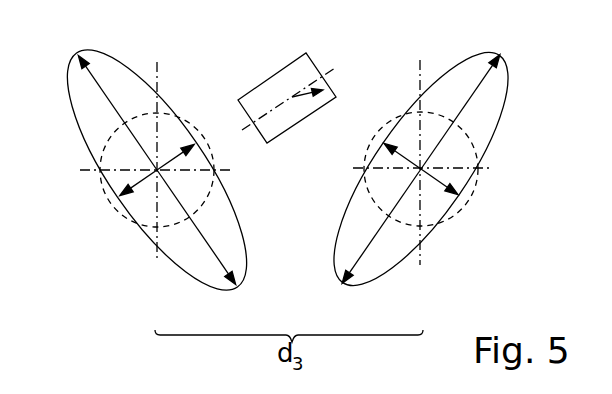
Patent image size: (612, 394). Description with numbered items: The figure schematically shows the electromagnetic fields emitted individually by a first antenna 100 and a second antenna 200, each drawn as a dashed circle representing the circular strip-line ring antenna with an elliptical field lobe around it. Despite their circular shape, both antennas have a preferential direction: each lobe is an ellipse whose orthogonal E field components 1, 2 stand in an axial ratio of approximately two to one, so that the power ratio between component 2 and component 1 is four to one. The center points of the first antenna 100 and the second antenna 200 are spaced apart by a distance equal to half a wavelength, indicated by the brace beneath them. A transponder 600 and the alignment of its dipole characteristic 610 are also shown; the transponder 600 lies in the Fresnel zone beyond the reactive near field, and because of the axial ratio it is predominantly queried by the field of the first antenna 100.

The first orthogonal E field component 1 is at (148, 174).
The second orthogonal E field component 2 is at (103, 100).
The first antenna 100 is at (470, 207).
The second antenna 200 is at (183, 113).
The transponder 600 is at (272, 78).
The dipole characteristic 610 is at (332, 92).